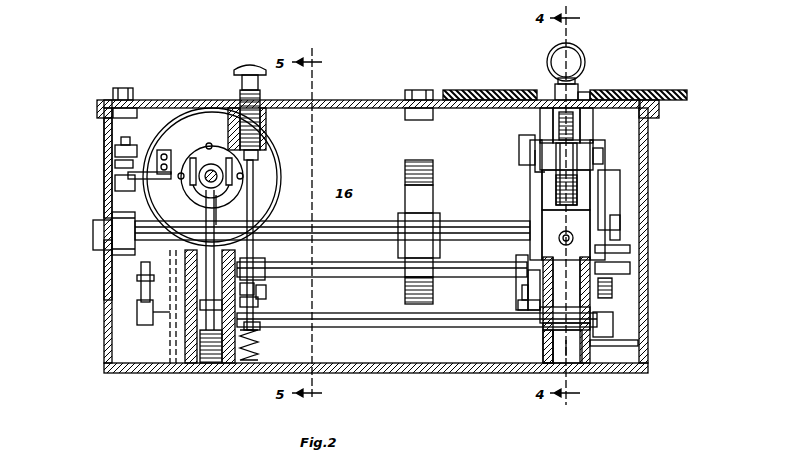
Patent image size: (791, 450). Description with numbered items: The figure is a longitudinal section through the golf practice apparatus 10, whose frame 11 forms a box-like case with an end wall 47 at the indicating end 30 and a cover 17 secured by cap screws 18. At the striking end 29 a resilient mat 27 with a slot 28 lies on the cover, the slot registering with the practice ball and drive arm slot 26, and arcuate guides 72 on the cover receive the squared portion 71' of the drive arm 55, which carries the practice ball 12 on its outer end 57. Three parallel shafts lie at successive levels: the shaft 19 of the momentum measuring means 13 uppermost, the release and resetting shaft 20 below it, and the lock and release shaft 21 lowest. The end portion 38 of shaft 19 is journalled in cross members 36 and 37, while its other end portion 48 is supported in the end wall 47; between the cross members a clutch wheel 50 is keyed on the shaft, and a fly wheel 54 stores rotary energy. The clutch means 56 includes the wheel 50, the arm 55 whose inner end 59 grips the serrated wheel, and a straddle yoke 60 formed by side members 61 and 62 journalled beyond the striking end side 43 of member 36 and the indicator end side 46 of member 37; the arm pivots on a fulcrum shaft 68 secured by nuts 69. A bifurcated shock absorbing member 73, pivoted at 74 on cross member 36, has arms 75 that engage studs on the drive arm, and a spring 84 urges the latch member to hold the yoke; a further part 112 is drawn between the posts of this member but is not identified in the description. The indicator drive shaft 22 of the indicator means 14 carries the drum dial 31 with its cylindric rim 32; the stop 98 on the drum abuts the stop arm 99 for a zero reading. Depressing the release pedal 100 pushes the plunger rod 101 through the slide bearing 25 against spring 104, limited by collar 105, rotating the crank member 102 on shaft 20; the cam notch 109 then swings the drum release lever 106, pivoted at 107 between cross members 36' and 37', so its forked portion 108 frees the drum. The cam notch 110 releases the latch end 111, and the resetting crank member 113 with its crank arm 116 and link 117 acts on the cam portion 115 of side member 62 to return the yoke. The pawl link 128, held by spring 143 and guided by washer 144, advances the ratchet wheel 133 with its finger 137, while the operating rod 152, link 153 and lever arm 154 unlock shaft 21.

The golf practice apparatus 10 is at (125, 378).
The frame 11 is at (103, 305).
The practice ball 12 is at (572, 50).
The momentum measuring means 13 is at (520, 175).
The indicator means 14 is at (281, 177).
The cover 17 is at (336, 108).
The cap screws 18 is at (113, 93).
The shaft 19 is at (455, 220).
The practice ball release and resetting shaft 20 is at (313, 272).
The lock and release shaft 21 is at (329, 327).
The indicator drive shaft 22 is at (210, 172).
The release plunger slide bearing 25 is at (262, 150).
The practice ball and drive arm slot 26 is at (585, 95).
The mat 27 is at (640, 90).
The mat slot 28 is at (548, 96).
The striking end 29 is at (644, 160).
The indicating end 30 is at (103, 170).
The indicator drum dial 31 is at (268, 190).
The cylindric dial rim 32 is at (278, 160).
The cross member 36 is at (588, 350).
The cross member 36' is at (236, 329).
The cross member 37 is at (548, 352).
The cross member 37' is at (162, 306).
The end portion of shaft 19 38 is at (620, 228).
The striking end side of cross member 36 43 is at (600, 343).
The indicator end side of cross member 37 46 is at (543, 335).
The end wall 47 is at (105, 275).
The end portion of shaft 19 48 is at (114, 233).
The clutch wheel 50 is at (588, 200).
The fly wheel 54 is at (418, 160).
The drive arm 55 is at (560, 125).
The clutch means 56 is at (595, 180).
The outer end of drive arm 57 is at (585, 82).
The inner end of drive arm 59 is at (555, 180).
The straddle yoke 60 is at (533, 205).
The side member 61 is at (608, 210).
The side member 62 is at (530, 235).
The fulcrum shaft 68 is at (603, 160).
The nuts 69 is at (600, 152).
The squared portion of drive arm 71' is at (546, 78).
The arcuate guides 72 is at (543, 117).
The bifurcated shock absorbing member 73 is at (566, 297).
The pivot of shock absorbing member 74 is at (613, 318).
The arms of shock absorbing member 75 is at (566, 174).
The spring 84 is at (611, 290).
The stop 98 is at (170, 155).
The stop arm 99 is at (160, 180).
The release pedal 100 is at (248, 65).
The release plunger rod 101 is at (247, 216).
The crank member 102 is at (265, 262).
The spring 104 is at (240, 95).
The collar 105 is at (237, 150).
The drum release lever 106 is at (208, 228).
The pivot of drum release lever 107 is at (209, 323).
The forked portion 108 is at (205, 200).
The cam notch 109 is at (216, 222).
The cam notch 110 is at (630, 268).
The end of latch member 111 is at (612, 253).
The cross member 112 is at (565, 290).
The yoke resetting crank member 113 is at (520, 283).
The cam portion 115 is at (527, 150).
The crank arm 116 is at (520, 293).
The yoke resetting link 117 is at (522, 308).
The pawl link 128 is at (255, 290).
The ratchet wheel 133 is at (267, 296).
The finger 137 is at (258, 304).
The spring 143 is at (260, 358).
The washer 144 is at (275, 327).
The operating rod 152 is at (147, 202).
The link 153 is at (141, 283).
The lever arm 154 is at (141, 296).